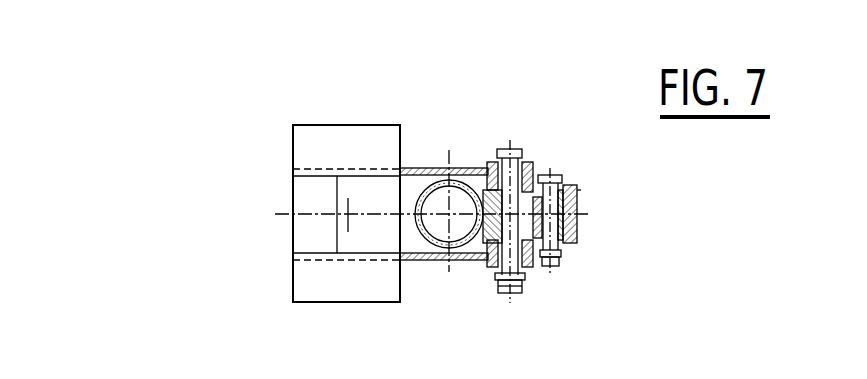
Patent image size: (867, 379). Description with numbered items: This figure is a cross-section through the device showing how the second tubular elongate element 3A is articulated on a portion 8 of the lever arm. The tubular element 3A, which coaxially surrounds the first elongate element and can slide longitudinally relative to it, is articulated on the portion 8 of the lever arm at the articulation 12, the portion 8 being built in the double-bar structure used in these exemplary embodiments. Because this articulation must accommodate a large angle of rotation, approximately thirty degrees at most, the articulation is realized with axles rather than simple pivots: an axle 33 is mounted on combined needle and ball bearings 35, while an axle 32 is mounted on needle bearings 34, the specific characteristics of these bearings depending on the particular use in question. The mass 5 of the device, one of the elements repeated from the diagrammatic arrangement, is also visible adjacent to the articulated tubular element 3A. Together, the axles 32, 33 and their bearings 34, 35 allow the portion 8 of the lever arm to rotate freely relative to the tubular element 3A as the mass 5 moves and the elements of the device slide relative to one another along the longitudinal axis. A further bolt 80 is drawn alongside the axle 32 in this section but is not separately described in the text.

The mass 5 is at (305, 139).
The portion of the lever arm 8 is at (462, 168).
The second tubular elongate element 3A is at (443, 195).
The combined needle and ball bearings 35 is at (489, 161).
The articulation 12 is at (517, 147).
The axle 33 is at (524, 278).
The bolt 80 is at (559, 171).
The axle 32 is at (578, 235).
The needle bearings 34 is at (578, 198).